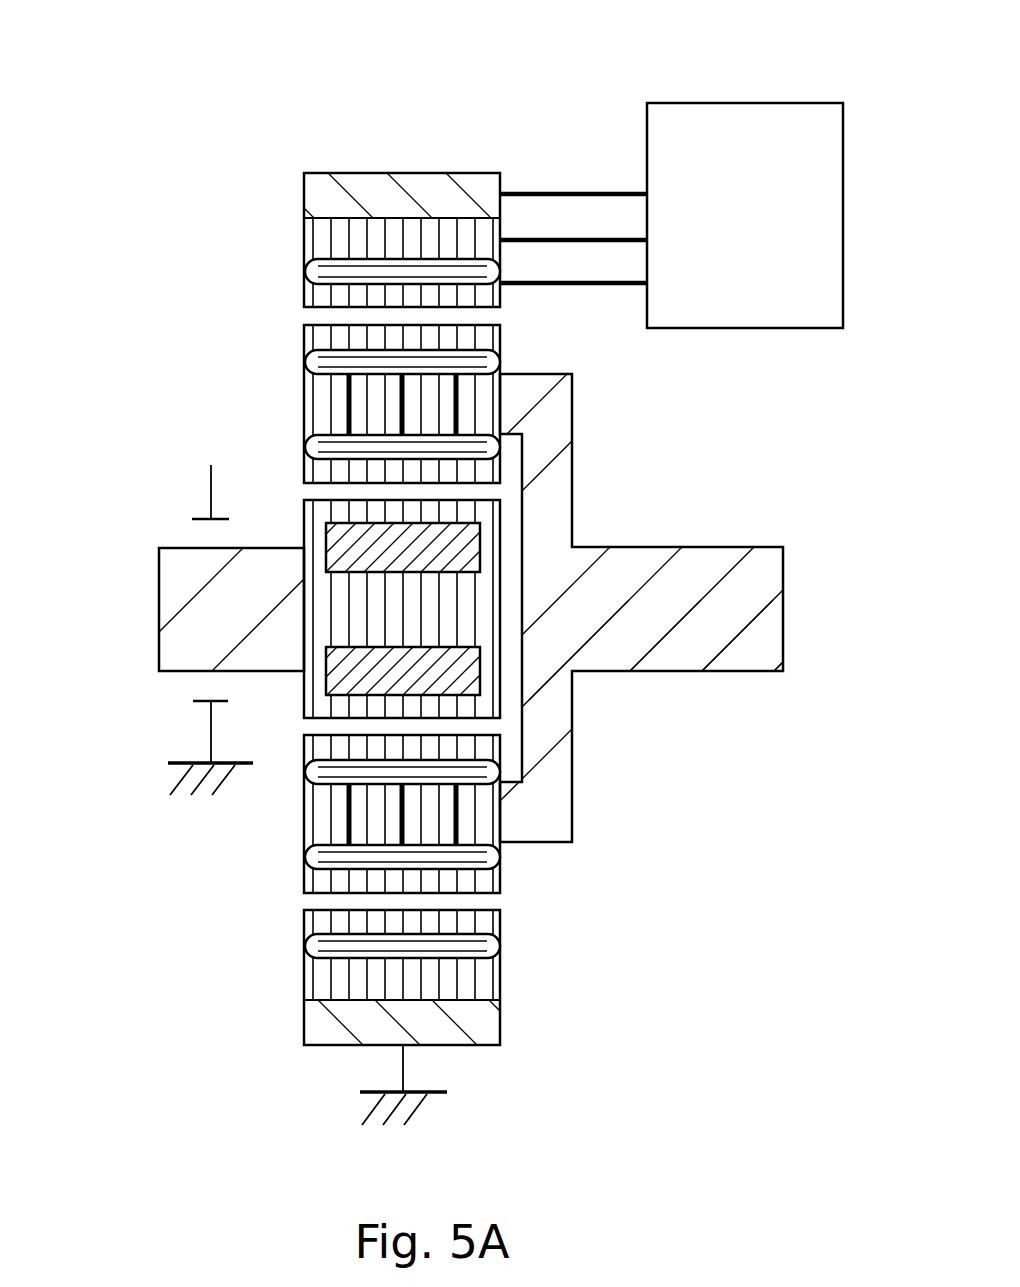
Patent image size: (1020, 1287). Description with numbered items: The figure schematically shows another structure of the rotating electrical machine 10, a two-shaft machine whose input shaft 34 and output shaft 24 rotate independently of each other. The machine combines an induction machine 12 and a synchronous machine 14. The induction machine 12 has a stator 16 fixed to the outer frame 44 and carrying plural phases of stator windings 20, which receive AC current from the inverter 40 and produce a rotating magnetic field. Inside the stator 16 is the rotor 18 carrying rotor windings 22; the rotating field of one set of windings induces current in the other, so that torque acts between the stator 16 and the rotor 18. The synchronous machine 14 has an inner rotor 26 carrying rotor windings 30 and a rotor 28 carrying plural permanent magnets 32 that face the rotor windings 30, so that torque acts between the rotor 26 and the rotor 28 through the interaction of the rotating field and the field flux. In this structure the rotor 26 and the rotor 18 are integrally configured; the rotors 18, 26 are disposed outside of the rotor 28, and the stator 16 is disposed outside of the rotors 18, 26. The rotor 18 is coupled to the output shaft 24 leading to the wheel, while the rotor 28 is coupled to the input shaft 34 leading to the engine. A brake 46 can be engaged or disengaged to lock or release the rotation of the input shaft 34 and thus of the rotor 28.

The rotating electrical machine 10 is at (625, 903).
The induction machine 12 is at (284, 321).
The synchronous machine 14 is at (288, 487).
The stator 16 is at (307, 237).
The rotor 18 is at (306, 822).
The stator windings 20 is at (307, 270).
The rotor windings 22 is at (306, 858).
The output shaft 24 is at (730, 638).
The rotor 26 is at (402, 814).
The rotor 28 is at (475, 592).
The rotor windings 30 is at (306, 774).
The permanent magnets 32 is at (462, 672).
The input shaft 34 is at (177, 578).
The inverter 40 is at (748, 103).
The outer frame 44 is at (418, 1090).
The brake 46 is at (200, 702).